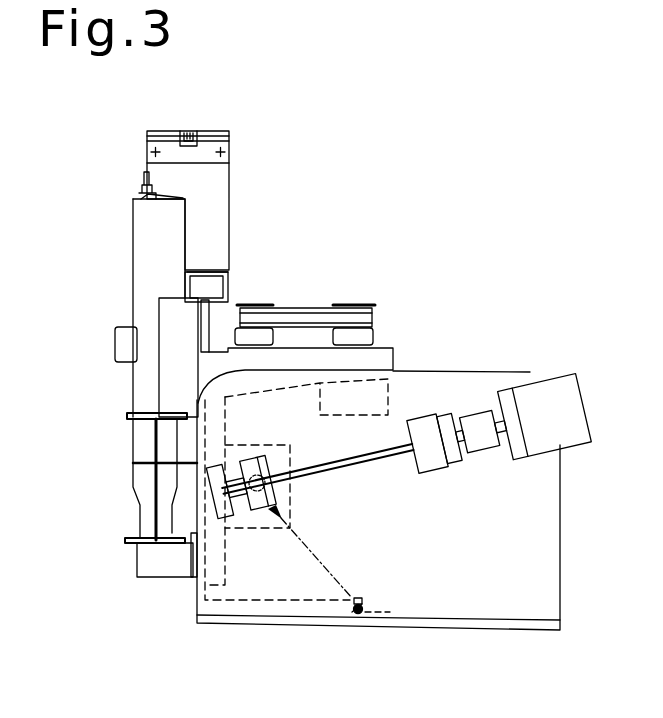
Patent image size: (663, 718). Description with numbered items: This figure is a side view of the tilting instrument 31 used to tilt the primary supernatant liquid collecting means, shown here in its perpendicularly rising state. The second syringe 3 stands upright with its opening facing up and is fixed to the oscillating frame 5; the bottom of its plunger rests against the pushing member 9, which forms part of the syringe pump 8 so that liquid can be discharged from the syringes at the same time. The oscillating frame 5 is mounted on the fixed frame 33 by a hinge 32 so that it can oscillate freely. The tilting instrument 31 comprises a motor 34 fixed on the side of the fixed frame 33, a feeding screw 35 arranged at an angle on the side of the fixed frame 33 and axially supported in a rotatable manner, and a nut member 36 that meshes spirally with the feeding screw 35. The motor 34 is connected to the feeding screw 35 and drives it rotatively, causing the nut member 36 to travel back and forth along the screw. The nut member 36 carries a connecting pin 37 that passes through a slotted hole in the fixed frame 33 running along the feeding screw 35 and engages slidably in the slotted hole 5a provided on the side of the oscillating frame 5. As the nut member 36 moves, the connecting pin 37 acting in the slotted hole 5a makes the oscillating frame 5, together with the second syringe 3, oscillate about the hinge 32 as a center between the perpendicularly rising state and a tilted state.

The second syringe 3 is at (143, 295).
The oscillating frame 5 is at (222, 563).
The slotted hole 5a is at (282, 518).
The syringe pump 8 is at (390, 335).
The pushing member 9 is at (152, 565).
The tilting instrument 31 is at (472, 572).
The hinge 32 is at (373, 600).
The fixed frame 33 is at (428, 390).
The motor 34 is at (538, 415).
The feeding screw 35 is at (366, 466).
The nut member 36 is at (244, 460).
The connecting pin 37 is at (270, 462).